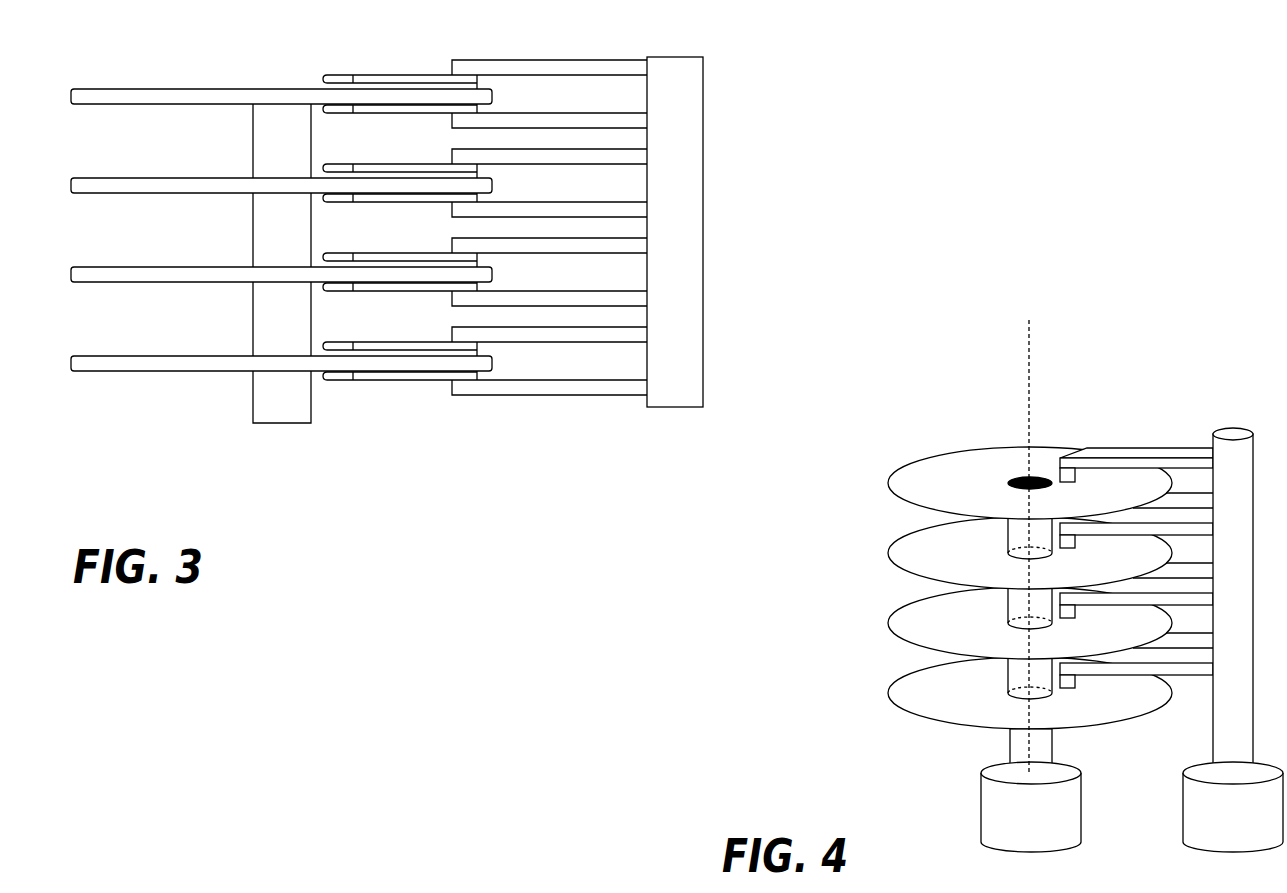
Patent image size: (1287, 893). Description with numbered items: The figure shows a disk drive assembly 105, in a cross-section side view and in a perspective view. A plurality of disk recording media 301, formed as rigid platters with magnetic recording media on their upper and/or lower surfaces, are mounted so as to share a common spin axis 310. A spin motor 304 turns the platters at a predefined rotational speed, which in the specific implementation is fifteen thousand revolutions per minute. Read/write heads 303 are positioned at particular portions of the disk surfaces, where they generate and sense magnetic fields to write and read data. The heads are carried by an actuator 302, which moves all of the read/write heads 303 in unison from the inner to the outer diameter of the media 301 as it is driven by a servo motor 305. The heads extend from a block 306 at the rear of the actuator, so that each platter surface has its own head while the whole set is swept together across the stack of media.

In FIG. 3, the disk drive assembly 105 is at (423, 267).
In FIG. 4, the disk drive assembly 105 is at (1055, 586).
In FIG. 3, the disk recording media 301 is at (175, 107).
In FIG. 4, the disk recording media 301 is at (915, 476).
In FIG. 3, the actuator 302 is at (458, 67).
In FIG. 4, the actuator 302 is at (1132, 450).
In FIG. 3, the read/write heads 303 is at (335, 117).
In FIG. 4, the read/write heads 303 is at (1073, 485).
In FIG. 3, the spin motor 304 is at (262, 406).
In FIG. 4, the spin motor 304 is at (1043, 828).
In FIG. 4, the servo motor 305 is at (1247, 824).
In FIG. 3, the actuator block 306 is at (698, 195).
In FIG. 4, the spin axis 310 is at (1025, 373).